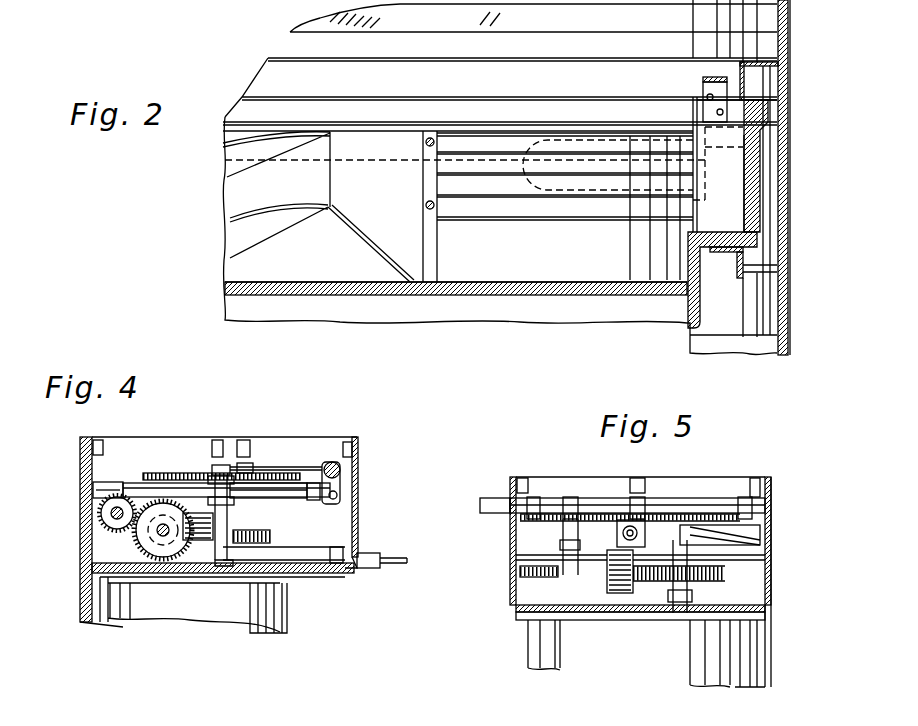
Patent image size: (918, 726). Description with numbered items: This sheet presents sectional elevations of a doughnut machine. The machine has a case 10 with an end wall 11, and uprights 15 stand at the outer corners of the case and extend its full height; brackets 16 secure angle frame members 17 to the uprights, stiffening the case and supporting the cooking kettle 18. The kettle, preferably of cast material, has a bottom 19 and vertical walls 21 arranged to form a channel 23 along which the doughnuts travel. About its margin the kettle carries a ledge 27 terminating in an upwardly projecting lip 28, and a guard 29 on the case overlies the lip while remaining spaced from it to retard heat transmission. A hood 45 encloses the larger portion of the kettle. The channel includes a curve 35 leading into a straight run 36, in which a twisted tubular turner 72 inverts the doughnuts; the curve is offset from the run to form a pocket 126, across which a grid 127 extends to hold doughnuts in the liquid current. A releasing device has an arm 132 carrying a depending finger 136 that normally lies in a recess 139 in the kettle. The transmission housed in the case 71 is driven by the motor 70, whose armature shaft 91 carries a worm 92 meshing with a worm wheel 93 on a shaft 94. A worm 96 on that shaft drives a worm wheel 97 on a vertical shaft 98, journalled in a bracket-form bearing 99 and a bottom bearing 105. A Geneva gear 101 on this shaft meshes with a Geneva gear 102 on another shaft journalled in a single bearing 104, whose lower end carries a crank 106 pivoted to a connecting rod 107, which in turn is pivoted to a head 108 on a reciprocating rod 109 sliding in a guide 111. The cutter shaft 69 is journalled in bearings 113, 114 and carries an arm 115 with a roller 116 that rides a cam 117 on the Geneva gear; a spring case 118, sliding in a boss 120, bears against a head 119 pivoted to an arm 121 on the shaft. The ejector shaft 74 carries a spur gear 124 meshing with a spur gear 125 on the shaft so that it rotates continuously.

In FIG. 2, the case 10 is at (780, 318).
In FIG. 2, the end wall 11 is at (788, 165).
In FIG. 2, the uprights 15 is at (790, 345).
In FIG. 4, the uprights 15 is at (95, 605).
In FIG. 5, the uprights 15 is at (757, 661).
In FIG. 2, the brackets 16 is at (760, 266).
In FIG. 2, the angle frame members 17 is at (736, 265).
In FIG. 2, the cooking kettle 18 is at (573, 296).
In FIG. 2, the bottom 19 is at (510, 292).
In FIG. 2, the vertical walls 21 is at (752, 205).
In FIG. 2, the channel 23 is at (388, 180).
In FIG. 2, the ledge 27 is at (745, 137).
In FIG. 2, the lip 28 is at (765, 115).
In FIG. 2, the guard 29 is at (775, 62).
In FIG. 2, the curve 35 is at (668, 205).
In FIG. 2, the straight run 36 is at (442, 258).
In FIG. 2, the hood 45 is at (300, 22).
In FIG. 4, the shaft 69 is at (332, 462).
In FIG. 5, the shaft 69 is at (612, 507).
In FIG. 4, the motor 70 is at (190, 612).
In FIG. 5, the motor 70 is at (532, 662).
In FIG. 4, the transmission case 71 is at (327, 577).
In FIG. 5, the transmission case 71 is at (510, 610).
In FIG. 2, the twisted tubular turner 72 is at (302, 211).
In FIG. 4, the shaft 74 is at (118, 512).
In FIG. 5, the shaft 74 is at (555, 557).
In FIG. 4, the armature shaft 91 is at (195, 540).
In FIG. 5, the armature shaft 91 is at (618, 582).
In FIG. 4, the worm 92 is at (222, 540).
In FIG. 5, the worm 92 is at (605, 585).
In FIG. 4, the worm wheel 93 is at (150, 556).
In FIG. 5, the worm wheel 93 is at (625, 510).
In FIG. 4, the shaft 94 is at (133, 543).
In FIG. 5, the shaft 94 is at (540, 604).
In FIG. 4, the worm 96 is at (120, 603).
In FIG. 5, the worm 96 is at (660, 582).
In FIG. 4, the worm wheel 97 is at (270, 548).
In FIG. 5, the worm wheel 97 is at (710, 622).
In FIG. 5, the vertical shaft 98 is at (688, 512).
In FIG. 5, the bearing 99 is at (765, 538).
In FIG. 4, the Geneva gear 101 is at (145, 476).
In FIG. 5, the Geneva gear 101 is at (720, 510).
In FIG. 4, the Geneva gear 102 is at (183, 473).
In FIG. 5, the Geneva gear 102 is at (588, 512).
In FIG. 4, the bearing 104 is at (222, 465).
In FIG. 5, the bearing 104 is at (560, 528).
In FIG. 5, the bearing 105 is at (680, 615).
In FIG. 4, the crank 106 is at (224, 542).
In FIG. 4, the connecting rod 107 is at (283, 590).
In FIG. 4, the head 108 is at (345, 575).
In FIG. 4, the reciprocating rod 109 is at (385, 555).
In FIG. 4, the guide 111 is at (336, 548).
In FIG. 5, the bearing 113 is at (755, 503).
In FIG. 5, the bearing 114 is at (525, 500).
In FIG. 4, the arm 115 is at (305, 467).
In FIG. 4, the roller 116 is at (248, 463).
In FIG. 4, the cam 117 is at (195, 450).
In FIG. 4, the case 118 is at (282, 498).
In FIG. 4, the head 119 is at (322, 500).
In FIG. 5, the head 119 is at (622, 535).
In FIG. 4, the boss 120 is at (95, 487).
In FIG. 4, the arm 121 is at (340, 480).
In FIG. 5, the arm 121 is at (668, 500).
In FIG. 4, the spur gear 124 is at (100, 505).
In FIG. 4, the spur gear 125 is at (113, 580).
In FIG. 2, the pocket 126 is at (640, 262).
In FIG. 2, the grid 127 is at (505, 176).
In FIG. 2, the arm 132 is at (703, 80).
In FIG. 2, the depending finger 136 is at (690, 118).
In FIG. 2, the recess 139 is at (738, 233).